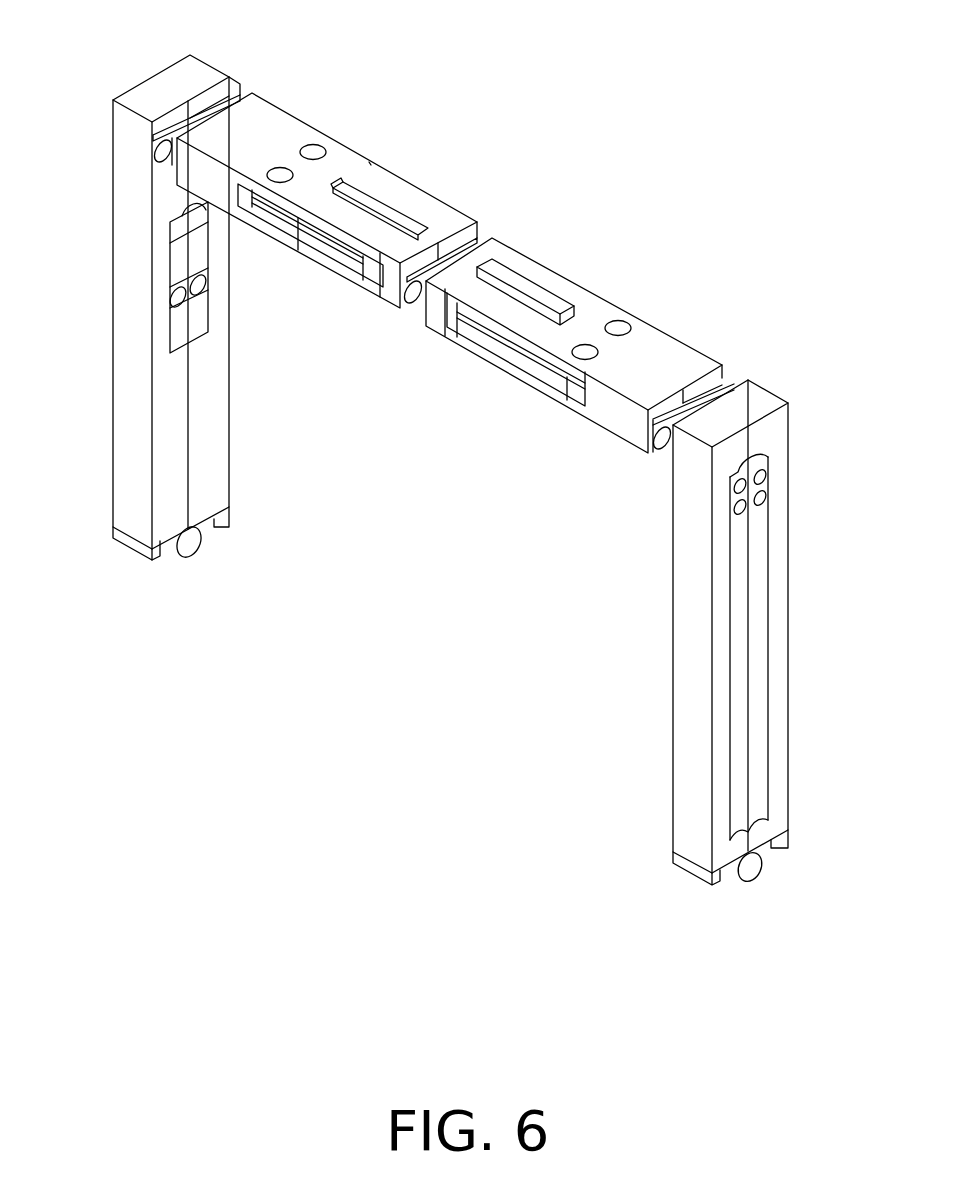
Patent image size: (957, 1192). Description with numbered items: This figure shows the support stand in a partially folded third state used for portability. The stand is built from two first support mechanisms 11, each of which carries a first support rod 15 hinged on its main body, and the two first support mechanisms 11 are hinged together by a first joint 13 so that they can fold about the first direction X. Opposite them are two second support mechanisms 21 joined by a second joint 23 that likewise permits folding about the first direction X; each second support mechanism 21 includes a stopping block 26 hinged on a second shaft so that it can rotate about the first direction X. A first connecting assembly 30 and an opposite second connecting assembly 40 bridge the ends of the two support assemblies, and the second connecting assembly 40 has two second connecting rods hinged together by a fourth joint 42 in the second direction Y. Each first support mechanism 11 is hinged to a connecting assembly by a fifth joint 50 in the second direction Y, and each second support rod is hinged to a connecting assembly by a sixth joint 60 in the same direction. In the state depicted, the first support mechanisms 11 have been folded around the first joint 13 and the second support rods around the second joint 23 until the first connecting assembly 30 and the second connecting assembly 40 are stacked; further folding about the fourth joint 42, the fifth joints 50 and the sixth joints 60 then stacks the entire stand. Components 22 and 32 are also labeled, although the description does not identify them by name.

The first support mechanism 11 is at (690, 713).
The first joint 13 is at (760, 874).
The first support rod 15 is at (742, 538).
The second support mechanism 21 is at (212, 427).
The second rail front portion 22 is at (168, 425).
The second joint 23 is at (195, 548).
The stopping block 26 is at (177, 262).
The first connecting assembly 30 is at (553, 287).
The connecting plate 32 is at (477, 247).
The second connecting assembly 40 is at (589, 336).
The fourth joint 42 is at (413, 297).
The fifth joint 50 is at (728, 387).
The sixth joint 60 is at (217, 108).